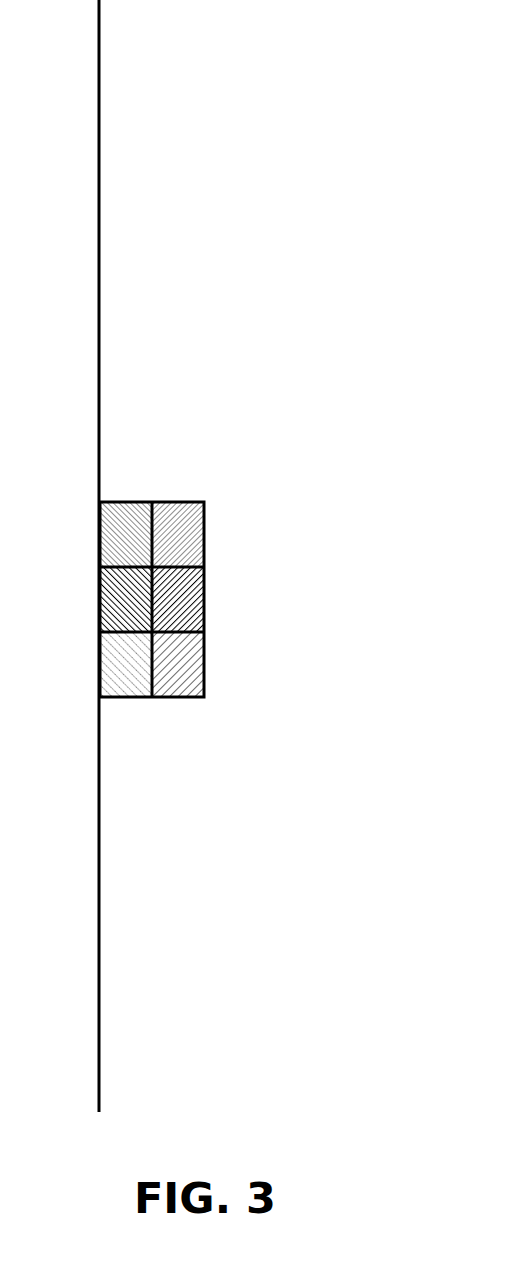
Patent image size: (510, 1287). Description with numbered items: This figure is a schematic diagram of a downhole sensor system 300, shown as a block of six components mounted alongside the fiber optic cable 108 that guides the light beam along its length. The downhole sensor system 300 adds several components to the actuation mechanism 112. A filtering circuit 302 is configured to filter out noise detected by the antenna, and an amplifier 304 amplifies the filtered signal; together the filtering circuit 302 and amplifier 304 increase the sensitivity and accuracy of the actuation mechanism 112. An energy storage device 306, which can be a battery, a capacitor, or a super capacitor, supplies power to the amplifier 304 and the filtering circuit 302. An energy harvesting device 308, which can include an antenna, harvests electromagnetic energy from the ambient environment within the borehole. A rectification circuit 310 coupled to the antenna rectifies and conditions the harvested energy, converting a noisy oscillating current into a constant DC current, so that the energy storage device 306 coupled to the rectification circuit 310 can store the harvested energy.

The fiber optic cable 108 is at (99, 237).
The downhole sensor system 300 is at (204, 548).
The actuation mechanism 112 is at (99, 542).
The filtering circuit 302 is at (204, 530).
The amplifier 304 is at (204, 607).
The energy storage device 306 is at (99, 618).
The energy harvesting device 308 is at (99, 660).
The rectification circuit 310 is at (204, 655).